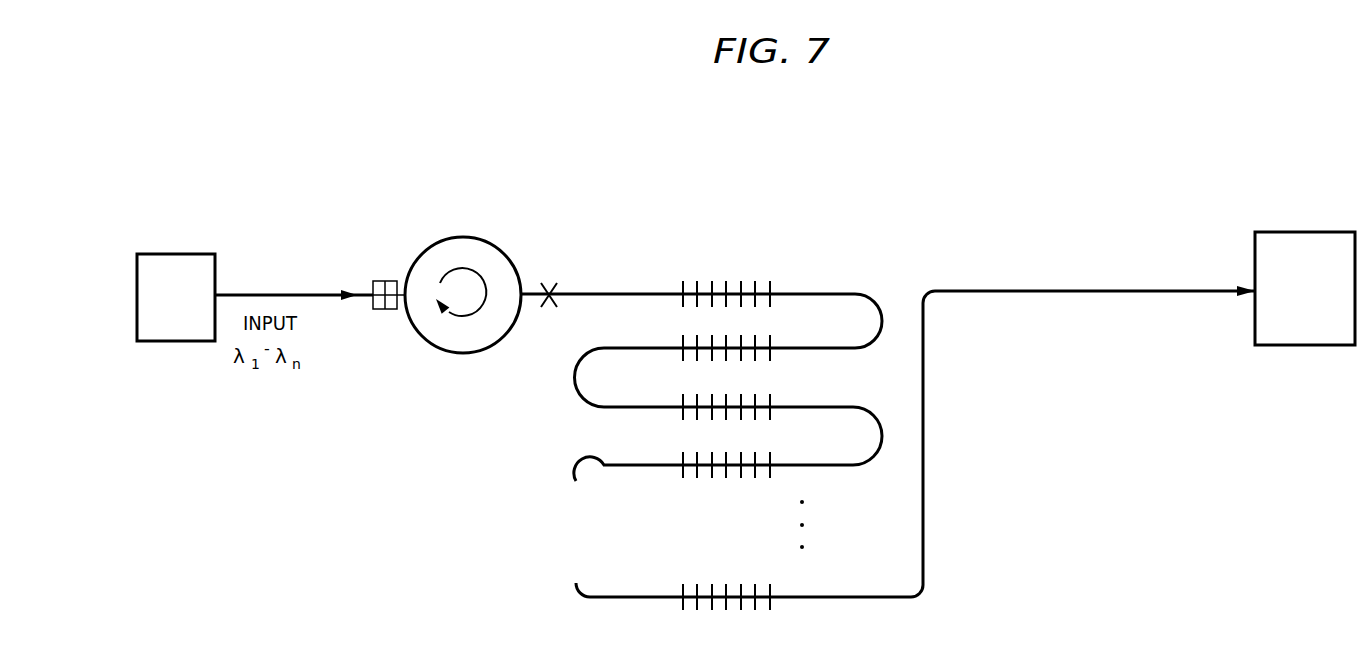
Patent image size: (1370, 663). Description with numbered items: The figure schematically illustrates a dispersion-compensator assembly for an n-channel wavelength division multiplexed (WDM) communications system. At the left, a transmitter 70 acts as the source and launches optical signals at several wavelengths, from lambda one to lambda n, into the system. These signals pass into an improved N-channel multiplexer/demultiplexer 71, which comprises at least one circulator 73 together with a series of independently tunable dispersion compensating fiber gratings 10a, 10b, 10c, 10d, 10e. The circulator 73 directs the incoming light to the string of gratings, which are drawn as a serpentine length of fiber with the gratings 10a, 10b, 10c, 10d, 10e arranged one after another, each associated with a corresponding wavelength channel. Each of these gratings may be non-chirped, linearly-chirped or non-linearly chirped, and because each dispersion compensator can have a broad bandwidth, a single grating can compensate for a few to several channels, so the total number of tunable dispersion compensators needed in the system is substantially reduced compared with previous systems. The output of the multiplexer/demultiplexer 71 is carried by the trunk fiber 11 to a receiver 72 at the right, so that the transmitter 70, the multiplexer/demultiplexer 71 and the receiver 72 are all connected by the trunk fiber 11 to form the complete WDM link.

The transmitter 70 is at (167, 254).
The circulator 73 is at (444, 238).
The N-channel multiplexer/demultiplexer 71 is at (742, 369).
The tunable dispersion compensating fiber grating 10a is at (668, 276).
The tunable dispersion compensating fiber grating 10b is at (668, 330).
The tunable dispersion compensating fiber grating 10c is at (668, 389).
The tunable dispersion compensating fiber grating 10d is at (668, 447).
The tunable dispersion compensating fiber grating 10e is at (668, 579).
The trunk fiber 11 is at (1045, 290).
The receiver 72 is at (1295, 232).